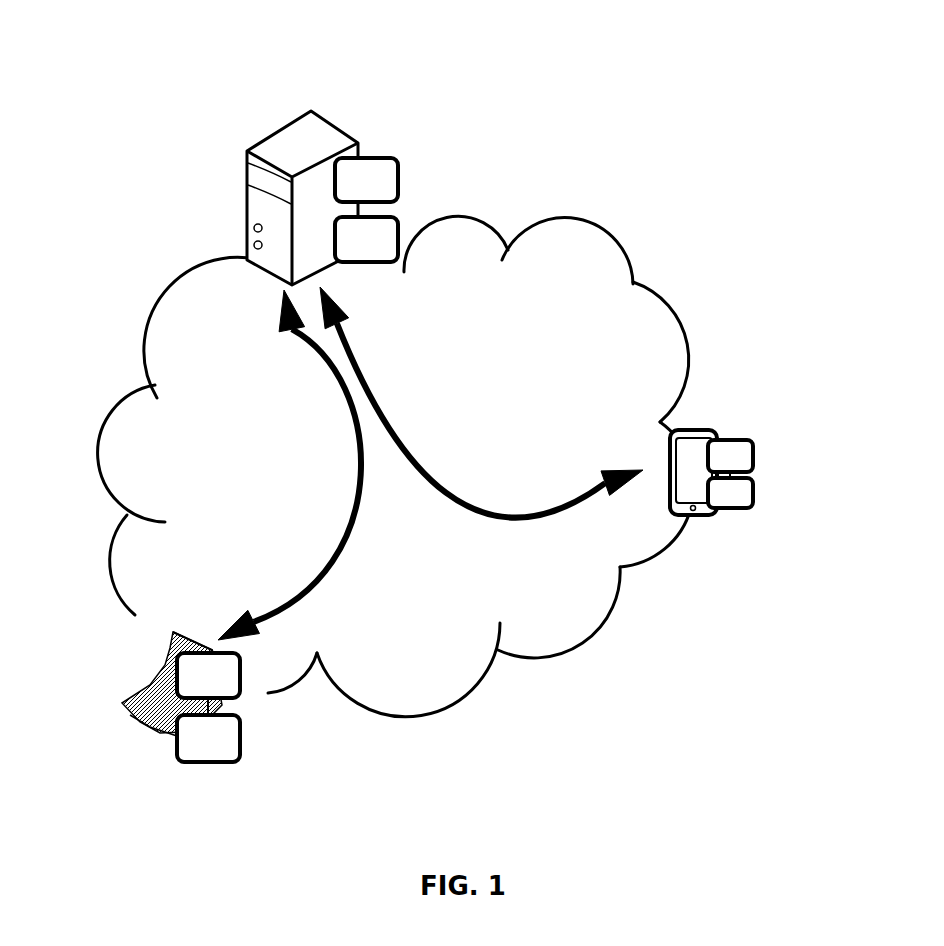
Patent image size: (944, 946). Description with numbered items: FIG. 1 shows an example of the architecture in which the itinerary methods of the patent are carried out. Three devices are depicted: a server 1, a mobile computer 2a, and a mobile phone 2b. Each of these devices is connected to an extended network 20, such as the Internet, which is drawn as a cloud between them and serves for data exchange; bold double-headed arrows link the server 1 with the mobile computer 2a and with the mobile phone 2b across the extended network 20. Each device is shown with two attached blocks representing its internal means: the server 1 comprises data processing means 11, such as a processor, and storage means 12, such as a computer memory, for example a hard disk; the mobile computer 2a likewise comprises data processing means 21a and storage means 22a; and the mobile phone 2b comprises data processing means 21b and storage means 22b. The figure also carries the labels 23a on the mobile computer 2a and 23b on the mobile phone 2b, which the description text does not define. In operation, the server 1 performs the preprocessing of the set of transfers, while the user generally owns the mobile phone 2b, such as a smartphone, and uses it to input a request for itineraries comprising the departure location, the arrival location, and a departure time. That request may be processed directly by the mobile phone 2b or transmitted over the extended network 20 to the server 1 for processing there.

The server 1 is at (312, 108).
The data processing means 11 is at (402, 247).
The storage means 12 is at (405, 168).
The extended network 20 is at (682, 322).
The mobile computer 2a is at (127, 690).
The data processing means 21a is at (250, 765).
The storage means 22a is at (250, 667).
The vehicle terminal display unit 23a is at (167, 646).
The mobile phone 2b is at (697, 533).
The data processing means 21b is at (758, 503).
The storage means 22b is at (755, 437).
The portable terminal display unit 23b is at (691, 463).